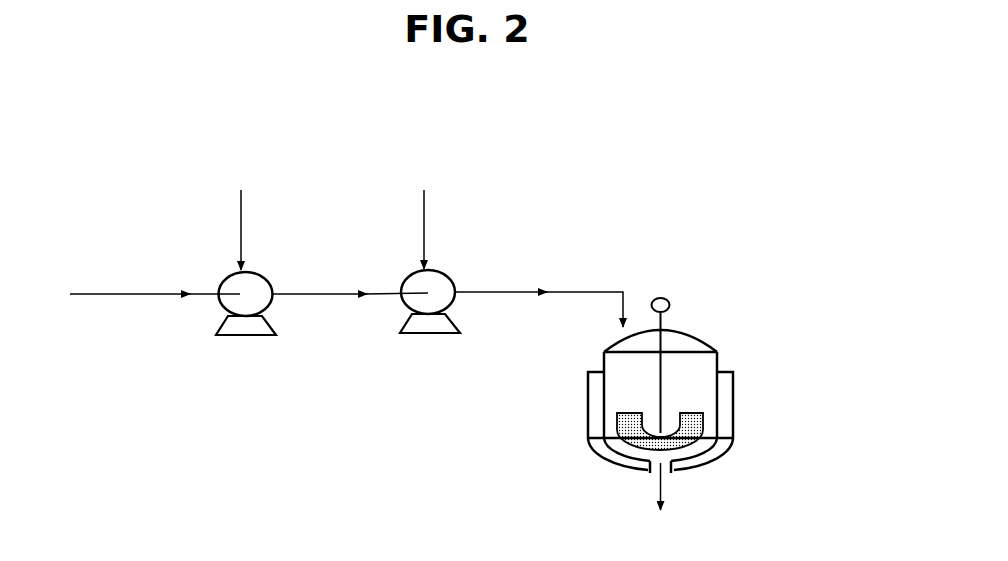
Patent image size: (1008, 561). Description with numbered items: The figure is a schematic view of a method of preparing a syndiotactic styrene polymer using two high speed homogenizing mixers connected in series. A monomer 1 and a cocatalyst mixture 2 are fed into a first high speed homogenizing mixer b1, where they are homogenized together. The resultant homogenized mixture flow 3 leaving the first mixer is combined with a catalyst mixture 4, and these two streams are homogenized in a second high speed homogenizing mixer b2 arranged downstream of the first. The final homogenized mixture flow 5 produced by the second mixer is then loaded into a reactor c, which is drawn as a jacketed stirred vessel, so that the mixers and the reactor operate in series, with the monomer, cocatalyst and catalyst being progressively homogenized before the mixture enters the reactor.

The monomer 1 is at (135, 298).
The cocatalyst mixture 2 is at (235, 210).
The homogenized mixture flow 3 is at (350, 275).
The catalyst mixture 4 is at (420, 211).
The final homogenized mixture flow 5 is at (539, 315).
The first high speed homogenizing mixer b1 is at (218, 282).
The second high speed homogenizing mixer b2 is at (455, 278).
The reactor c is at (722, 360).